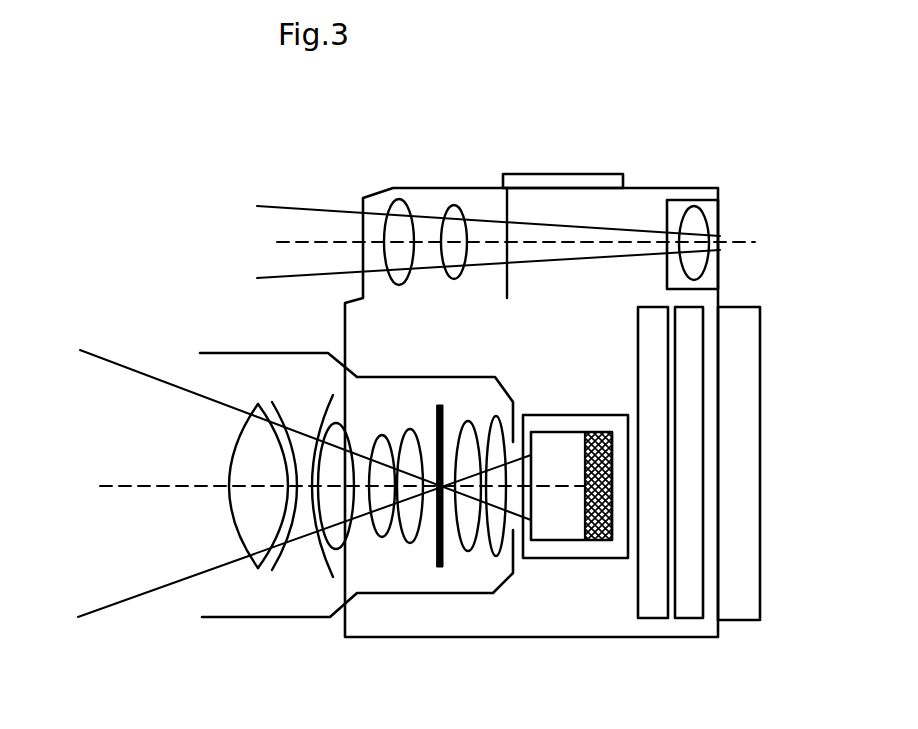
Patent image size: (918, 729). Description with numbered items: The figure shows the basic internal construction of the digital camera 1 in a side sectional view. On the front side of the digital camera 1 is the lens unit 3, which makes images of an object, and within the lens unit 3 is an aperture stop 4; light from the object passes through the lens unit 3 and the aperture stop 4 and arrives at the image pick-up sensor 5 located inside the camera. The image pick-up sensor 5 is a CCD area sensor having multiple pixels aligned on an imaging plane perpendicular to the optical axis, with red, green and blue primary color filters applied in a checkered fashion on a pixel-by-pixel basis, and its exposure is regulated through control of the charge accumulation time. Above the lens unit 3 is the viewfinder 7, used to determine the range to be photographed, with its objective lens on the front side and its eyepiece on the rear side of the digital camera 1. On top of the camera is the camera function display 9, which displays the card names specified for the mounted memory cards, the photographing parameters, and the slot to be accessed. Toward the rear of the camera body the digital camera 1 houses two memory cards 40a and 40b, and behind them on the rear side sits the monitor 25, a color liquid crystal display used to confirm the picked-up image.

The digital camera 1 is at (745, 33).
The lens unit 3 is at (192, 599).
The aperture stop 4 is at (436, 564).
The image pick-up sensor 5 is at (563, 541).
The viewfinder 7 is at (738, 220).
The camera function display 9 is at (562, 175).
The monitor 25 is at (760, 368).
The memory card 40a is at (650, 620).
The memory card 40b is at (690, 620).